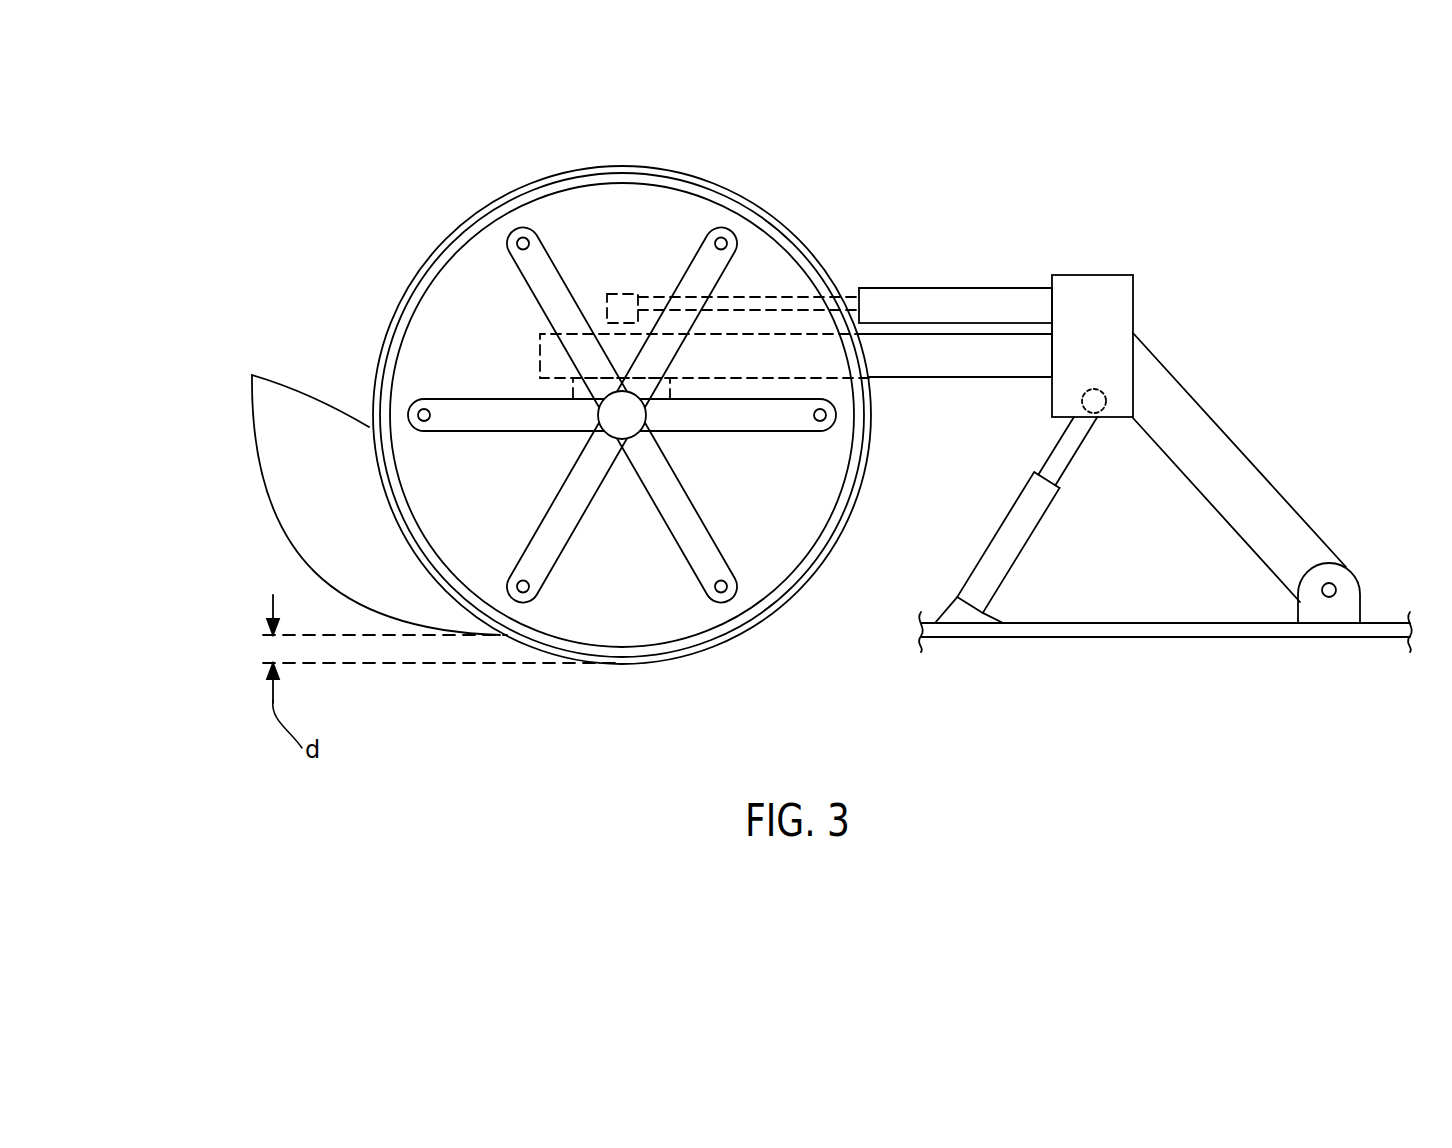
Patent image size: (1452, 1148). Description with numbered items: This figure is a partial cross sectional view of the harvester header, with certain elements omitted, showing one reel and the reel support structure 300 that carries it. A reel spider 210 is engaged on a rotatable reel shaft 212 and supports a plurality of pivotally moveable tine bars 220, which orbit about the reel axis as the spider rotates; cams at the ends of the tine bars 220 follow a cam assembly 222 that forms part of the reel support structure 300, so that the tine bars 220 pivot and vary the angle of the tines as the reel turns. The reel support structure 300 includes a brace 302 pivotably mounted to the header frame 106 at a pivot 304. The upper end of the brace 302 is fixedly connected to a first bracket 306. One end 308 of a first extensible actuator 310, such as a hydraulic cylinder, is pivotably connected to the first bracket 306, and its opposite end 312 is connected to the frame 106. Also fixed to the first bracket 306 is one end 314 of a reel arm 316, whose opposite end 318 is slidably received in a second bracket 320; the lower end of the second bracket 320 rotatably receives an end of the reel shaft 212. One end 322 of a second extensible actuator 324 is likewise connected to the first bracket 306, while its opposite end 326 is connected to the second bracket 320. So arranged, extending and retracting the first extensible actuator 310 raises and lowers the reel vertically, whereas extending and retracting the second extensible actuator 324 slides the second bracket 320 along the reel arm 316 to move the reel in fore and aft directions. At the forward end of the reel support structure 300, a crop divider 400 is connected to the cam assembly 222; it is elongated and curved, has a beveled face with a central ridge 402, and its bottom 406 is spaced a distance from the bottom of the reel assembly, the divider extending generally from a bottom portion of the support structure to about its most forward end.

The frame 106 is at (1172, 637).
The reel spider 210 is at (587, 508).
The reel shaft 212 is at (625, 420).
The tine bar 220 is at (514, 252).
The cam assembly 222 is at (442, 243).
The reel support structure 300 is at (1178, 280).
The brace 302 is at (1263, 473).
The pivot 304 is at (1330, 588).
The first bracket 306 is at (1113, 275).
The end of first extensible actuator 308 is at (1098, 405).
The first extensible actuator 310 is at (1032, 538).
The opposite end of first extensible actuator 312 is at (937, 622).
The end of reel arm 314 is at (1052, 378).
The reel arm 316 is at (905, 378).
The opposite end of reel arm 318 is at (540, 360).
The second bracket 320 is at (586, 320).
The end of second extensible actuator 322 is at (1020, 288).
The second extensible actuator 324 is at (937, 282).
The opposite end of second extensible actuator 326 is at (632, 293).
The crop divider 400 is at (370, 556).
The central ridge 402 is at (268, 508).
The bottom of crop divider 406 is at (507, 635).